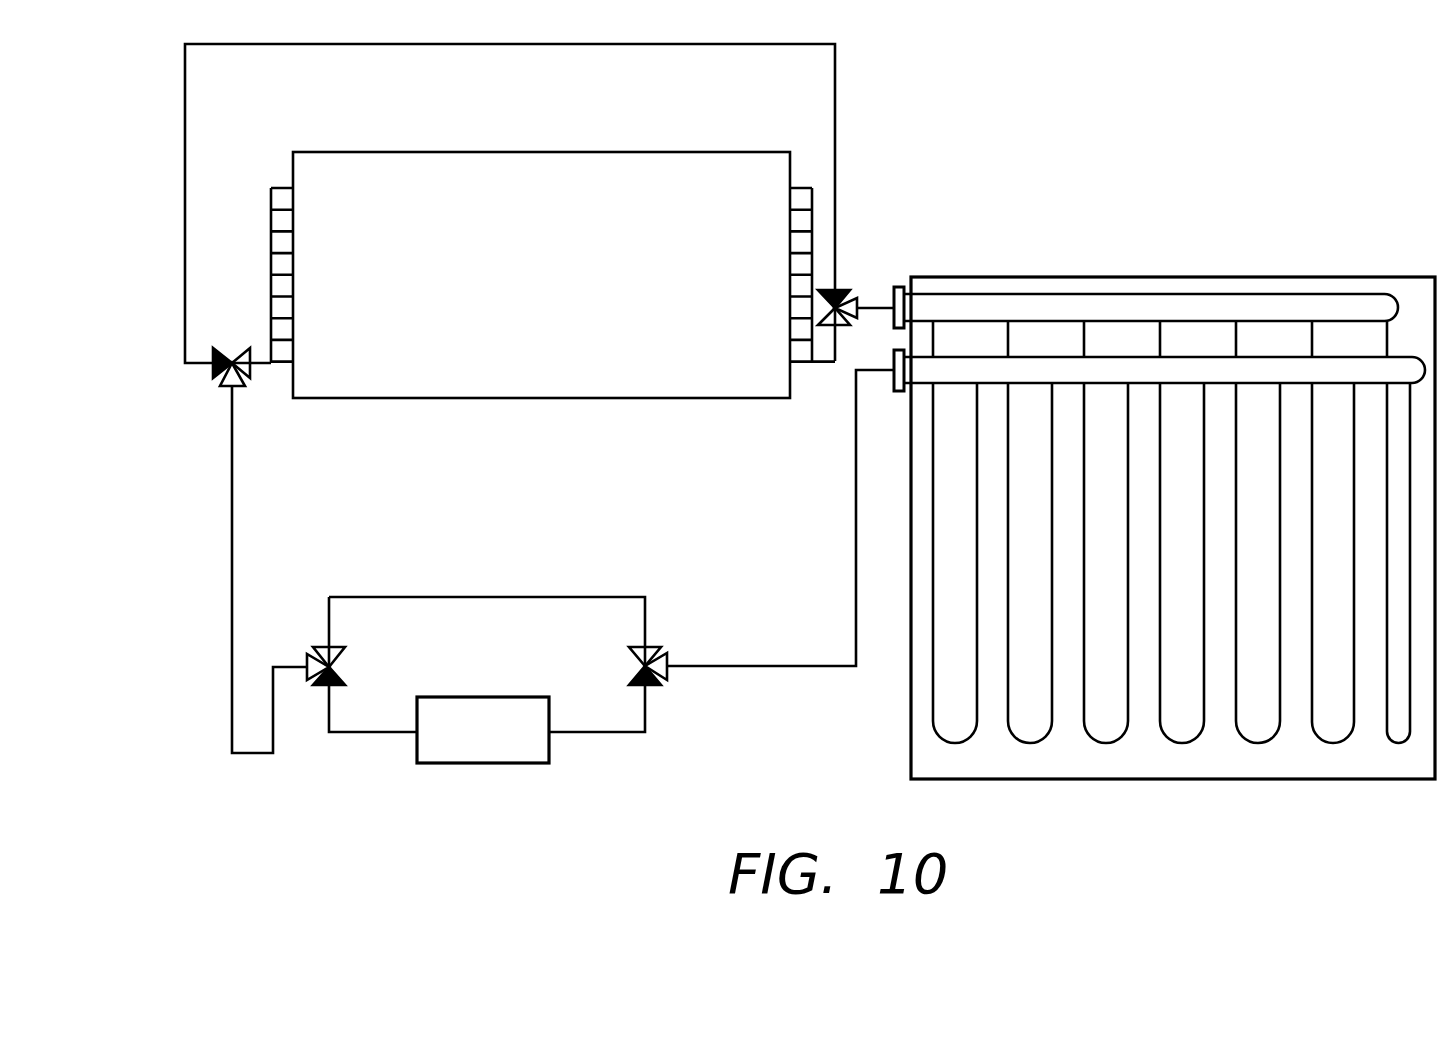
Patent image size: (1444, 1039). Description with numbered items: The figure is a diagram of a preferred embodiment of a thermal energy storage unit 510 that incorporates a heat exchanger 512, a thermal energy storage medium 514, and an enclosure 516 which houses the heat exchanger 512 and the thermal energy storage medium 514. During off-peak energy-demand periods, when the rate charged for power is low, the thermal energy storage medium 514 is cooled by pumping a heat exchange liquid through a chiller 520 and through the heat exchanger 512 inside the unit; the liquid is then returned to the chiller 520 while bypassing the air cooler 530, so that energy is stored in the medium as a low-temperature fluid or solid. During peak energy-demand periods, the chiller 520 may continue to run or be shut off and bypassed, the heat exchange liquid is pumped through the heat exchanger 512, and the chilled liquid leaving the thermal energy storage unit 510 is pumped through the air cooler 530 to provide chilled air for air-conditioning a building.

The thermal energy storage unit 510 is at (1127, 508).
The heat exchanger 512 is at (1316, 316).
The thermal energy storage medium 514 is at (1073, 762).
The enclosure 516 is at (911, 738).
The chiller 520 is at (488, 747).
The air cooler 530 is at (553, 384).